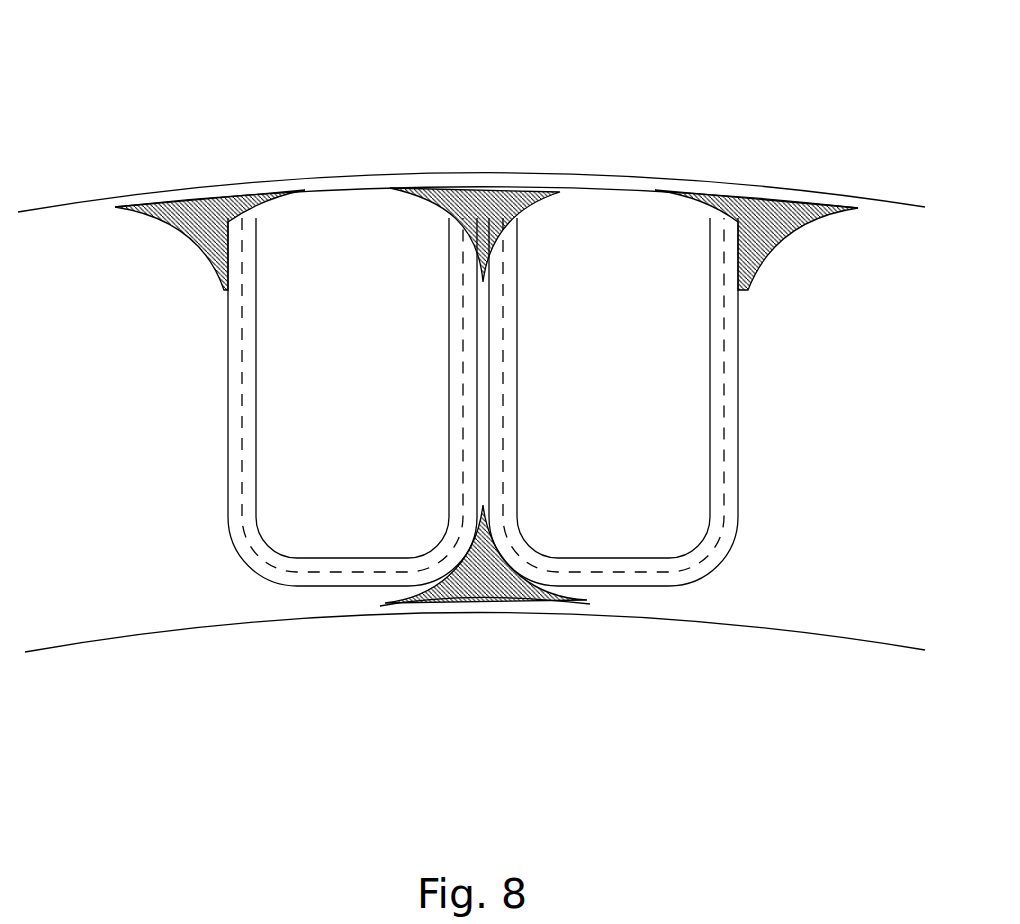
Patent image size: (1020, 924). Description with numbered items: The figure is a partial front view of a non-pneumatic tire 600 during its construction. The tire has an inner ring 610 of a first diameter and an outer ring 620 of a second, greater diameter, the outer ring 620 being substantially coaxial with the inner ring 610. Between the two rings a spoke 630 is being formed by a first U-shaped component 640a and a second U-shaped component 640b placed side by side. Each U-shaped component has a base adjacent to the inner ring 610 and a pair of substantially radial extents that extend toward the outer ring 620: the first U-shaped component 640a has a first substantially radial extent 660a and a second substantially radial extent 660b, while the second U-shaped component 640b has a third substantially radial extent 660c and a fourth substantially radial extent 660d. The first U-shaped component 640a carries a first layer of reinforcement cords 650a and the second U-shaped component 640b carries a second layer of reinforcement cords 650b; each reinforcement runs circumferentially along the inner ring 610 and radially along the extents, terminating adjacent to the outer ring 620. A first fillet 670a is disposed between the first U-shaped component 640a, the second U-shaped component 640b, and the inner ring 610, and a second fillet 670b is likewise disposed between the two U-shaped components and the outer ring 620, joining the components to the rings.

The non-pneumatic tire 600 is at (118, 593).
The inner ring 610 is at (291, 636).
The outer ring 620 is at (207, 148).
The spoke 630 is at (468, 620).
The first U-shaped component 640a is at (355, 595).
The second U-shaped component 640b is at (640, 595).
The first layer of reinforcement cords 650a is at (273, 567).
The second layer of reinforcement cords 650b is at (683, 567).
The first substantially radial extent 660a is at (225, 375).
The second substantially radial extent 660b is at (445, 375).
The third substantially radial extent 660c is at (520, 375).
The fourth substantially radial extent 660d is at (745, 375).
The first fillet 670a is at (517, 607).
The second fillet 670b is at (491, 190).